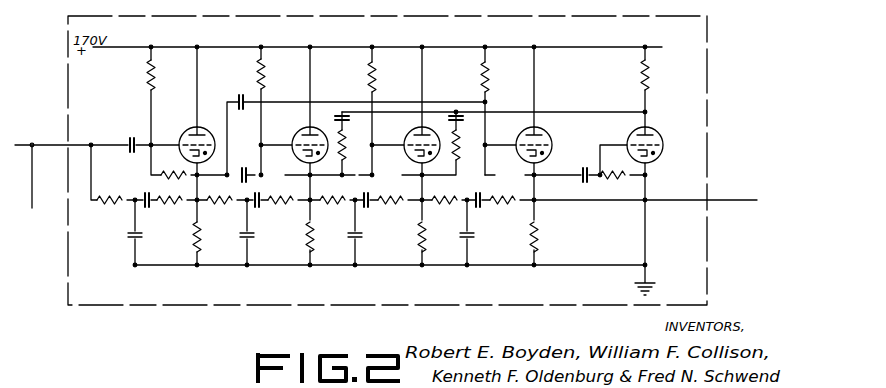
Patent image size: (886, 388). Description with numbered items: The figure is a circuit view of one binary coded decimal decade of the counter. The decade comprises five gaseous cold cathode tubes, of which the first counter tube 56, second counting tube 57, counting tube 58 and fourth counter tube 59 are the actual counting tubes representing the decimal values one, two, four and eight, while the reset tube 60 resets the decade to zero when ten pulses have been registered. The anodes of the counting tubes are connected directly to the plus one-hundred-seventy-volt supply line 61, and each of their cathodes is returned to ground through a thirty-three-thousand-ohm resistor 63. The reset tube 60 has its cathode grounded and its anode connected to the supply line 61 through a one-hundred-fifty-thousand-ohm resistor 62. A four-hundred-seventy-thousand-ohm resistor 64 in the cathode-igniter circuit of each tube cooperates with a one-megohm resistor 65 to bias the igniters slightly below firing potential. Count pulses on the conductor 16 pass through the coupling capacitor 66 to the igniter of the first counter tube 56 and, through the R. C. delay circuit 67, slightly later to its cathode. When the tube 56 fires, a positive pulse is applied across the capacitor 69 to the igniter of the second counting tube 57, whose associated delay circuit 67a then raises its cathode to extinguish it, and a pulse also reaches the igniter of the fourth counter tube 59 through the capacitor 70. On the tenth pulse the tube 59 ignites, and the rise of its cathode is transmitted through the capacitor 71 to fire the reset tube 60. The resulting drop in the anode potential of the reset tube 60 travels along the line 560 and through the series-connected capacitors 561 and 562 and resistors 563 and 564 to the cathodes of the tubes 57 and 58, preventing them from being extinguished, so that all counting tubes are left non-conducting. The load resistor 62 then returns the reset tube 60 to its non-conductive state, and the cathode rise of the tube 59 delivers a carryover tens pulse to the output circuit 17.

The conductor 16 is at (46, 140).
The output circuit 17 is at (728, 203).
The supply line 61 is at (136, 47).
The resistor 62 is at (650, 79).
The resistor 63 is at (190, 238).
The resistor 64 is at (160, 175).
The resistor 65 is at (143, 76).
The coupling capacitor 66 is at (132, 133).
The R. C. delay circuit 67 is at (124, 211).
The delay circuit 67a is at (243, 212).
The capacitor 69 is at (244, 168).
The capacitor 70 is at (244, 80).
The capacitor 71 is at (587, 167).
The first counter tube 56 is at (186, 128).
The second counting tube 57 is at (298, 129).
The counting tube 58 is at (412, 131).
The fourth counter tube 59 is at (523, 130).
The reset tube 60 is at (628, 133).
The line 560 is at (589, 112).
The capacitor 561 is at (334, 118).
The capacitor 562 is at (448, 118).
The resistor 563 is at (348, 148).
The resistor 564 is at (462, 148).